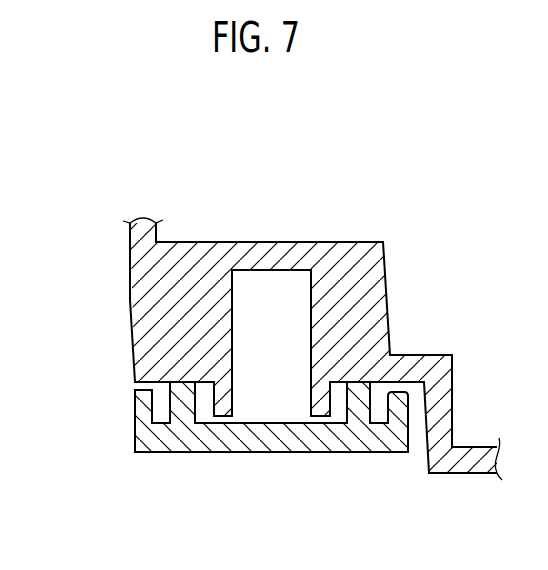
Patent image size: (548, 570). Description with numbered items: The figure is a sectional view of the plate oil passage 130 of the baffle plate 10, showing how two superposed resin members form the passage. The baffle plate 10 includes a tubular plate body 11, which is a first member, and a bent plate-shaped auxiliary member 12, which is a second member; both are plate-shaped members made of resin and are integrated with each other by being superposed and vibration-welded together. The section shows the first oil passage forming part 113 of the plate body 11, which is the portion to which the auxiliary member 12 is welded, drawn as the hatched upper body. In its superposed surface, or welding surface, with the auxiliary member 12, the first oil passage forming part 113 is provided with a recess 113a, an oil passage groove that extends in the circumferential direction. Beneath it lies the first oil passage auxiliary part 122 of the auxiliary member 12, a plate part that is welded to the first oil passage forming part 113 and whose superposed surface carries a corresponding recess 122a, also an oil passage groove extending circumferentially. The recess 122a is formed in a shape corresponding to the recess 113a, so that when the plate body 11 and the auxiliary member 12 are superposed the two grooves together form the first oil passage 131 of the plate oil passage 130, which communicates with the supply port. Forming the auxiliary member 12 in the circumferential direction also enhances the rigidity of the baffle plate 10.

The baffle plate 10 is at (96, 248).
The plate body 11 is at (124, 307).
The auxiliary member 12 is at (125, 422).
The first oil passage forming part 113 is at (213, 242).
The recess 113a is at (262, 269).
The plate oil passage 130 is at (313, 268).
The first oil passage 131 is at (271, 343).
The first oil passage auxiliary part 122 is at (205, 452).
The recess 122a is at (272, 424).